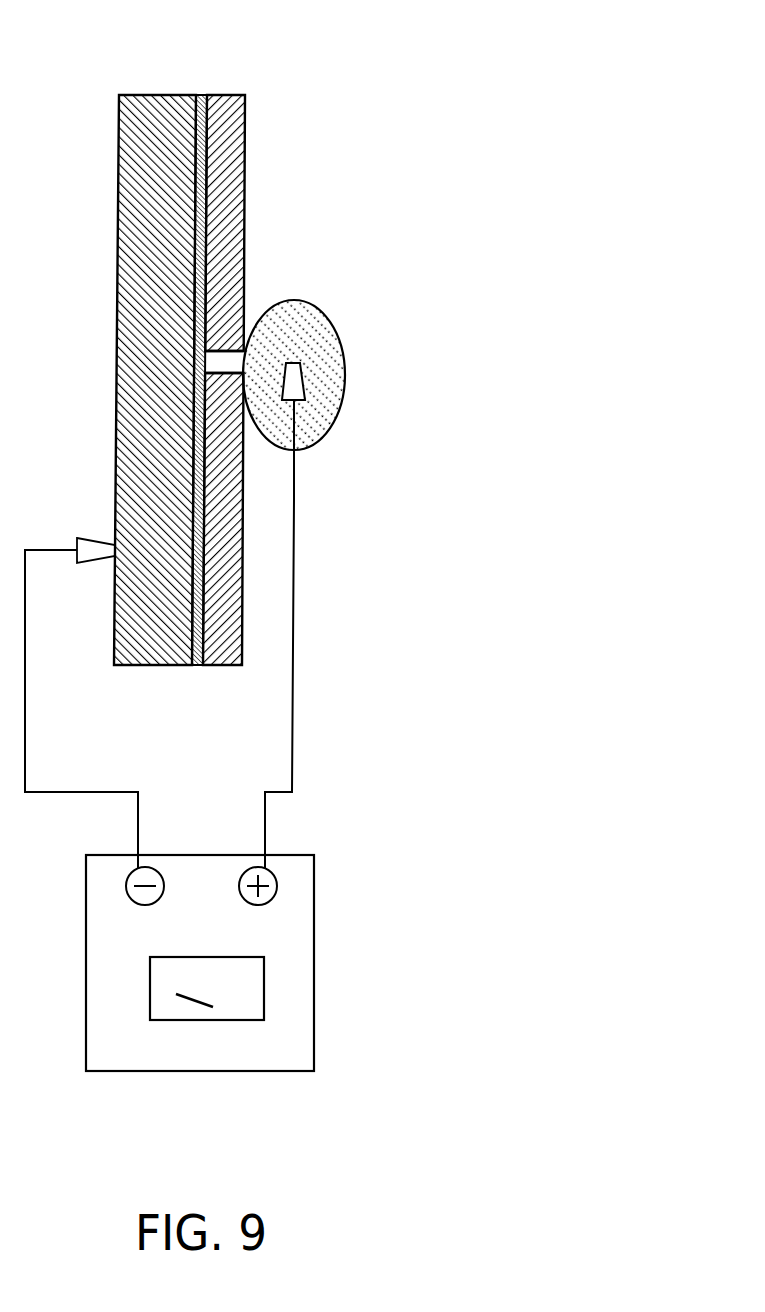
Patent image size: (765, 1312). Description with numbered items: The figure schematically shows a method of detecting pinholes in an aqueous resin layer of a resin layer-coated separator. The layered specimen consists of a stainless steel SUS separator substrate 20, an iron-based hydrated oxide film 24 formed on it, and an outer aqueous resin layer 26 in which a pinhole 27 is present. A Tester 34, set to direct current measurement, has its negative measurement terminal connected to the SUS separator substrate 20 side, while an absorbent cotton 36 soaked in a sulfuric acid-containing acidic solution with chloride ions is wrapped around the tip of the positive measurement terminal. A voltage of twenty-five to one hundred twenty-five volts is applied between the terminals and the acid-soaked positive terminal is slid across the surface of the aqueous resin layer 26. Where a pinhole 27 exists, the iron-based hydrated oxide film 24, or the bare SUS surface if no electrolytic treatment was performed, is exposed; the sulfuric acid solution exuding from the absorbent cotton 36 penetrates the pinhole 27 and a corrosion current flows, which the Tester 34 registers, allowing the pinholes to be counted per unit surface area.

The SUS separator substrate 20 is at (155, 95).
The iron-based hydrated oxide film 24 is at (208, 95).
The aqueous resin layer 26 is at (245, 107).
The pinhole 27 is at (218, 362).
The tester 34 is at (314, 955).
The absorbent cotton 36 is at (333, 362).